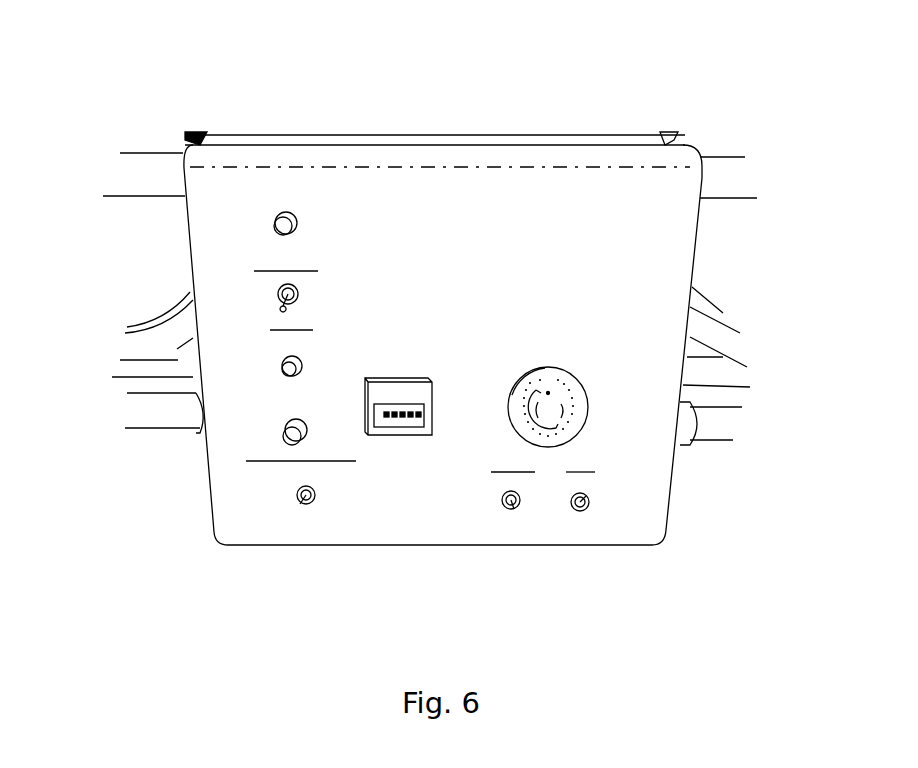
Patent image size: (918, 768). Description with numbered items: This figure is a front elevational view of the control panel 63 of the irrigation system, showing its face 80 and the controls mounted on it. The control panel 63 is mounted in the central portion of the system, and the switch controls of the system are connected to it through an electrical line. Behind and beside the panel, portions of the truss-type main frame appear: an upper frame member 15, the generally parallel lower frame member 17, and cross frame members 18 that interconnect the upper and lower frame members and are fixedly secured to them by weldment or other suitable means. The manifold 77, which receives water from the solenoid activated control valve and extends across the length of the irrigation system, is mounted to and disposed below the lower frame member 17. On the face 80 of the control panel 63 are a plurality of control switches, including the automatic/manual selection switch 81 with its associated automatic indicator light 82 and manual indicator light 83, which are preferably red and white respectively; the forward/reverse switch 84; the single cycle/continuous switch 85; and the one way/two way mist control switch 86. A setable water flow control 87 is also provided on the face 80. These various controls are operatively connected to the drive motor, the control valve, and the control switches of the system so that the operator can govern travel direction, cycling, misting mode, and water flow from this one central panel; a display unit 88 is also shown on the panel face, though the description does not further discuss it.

The upper frame member 15 is at (718, 185).
The lower frame member 17 is at (177, 360).
The cross frame members 18 is at (717, 333).
The control panel 63 is at (337, 142).
The manifold 77 is at (162, 407).
The face 80 is at (416, 240).
The automatic/manual selection switch 81 is at (282, 298).
The automatic indicator light 82 is at (274, 227).
The manual indicator light 83 is at (288, 375).
The forward/reverse switch 84 is at (297, 494).
The single cycle/continuous switch 85 is at (505, 506).
The one way/two way mist control switch 86 is at (589, 500).
The water flow control 87 is at (580, 418).
The digital display 88 is at (402, 427).